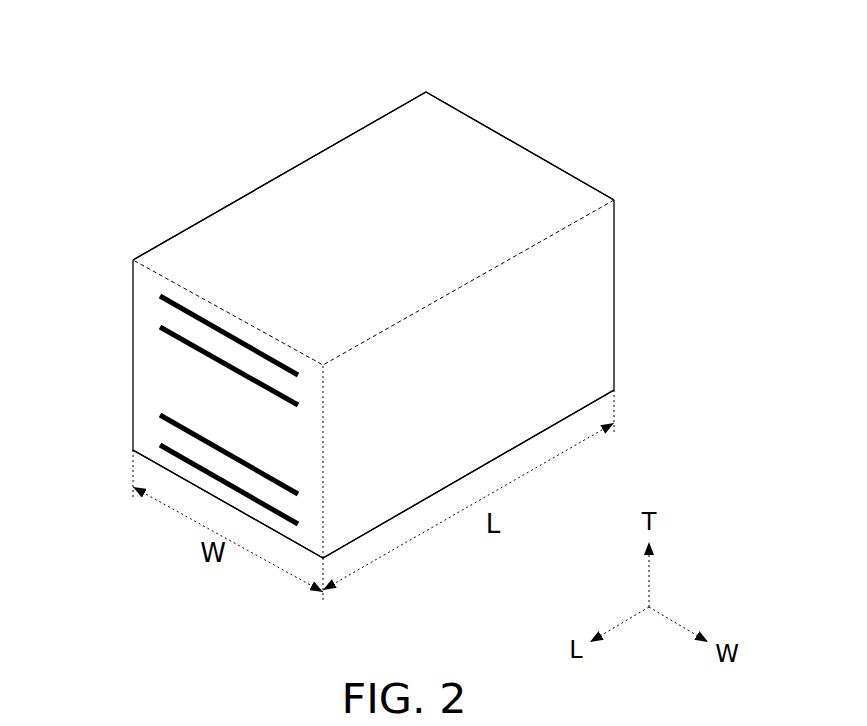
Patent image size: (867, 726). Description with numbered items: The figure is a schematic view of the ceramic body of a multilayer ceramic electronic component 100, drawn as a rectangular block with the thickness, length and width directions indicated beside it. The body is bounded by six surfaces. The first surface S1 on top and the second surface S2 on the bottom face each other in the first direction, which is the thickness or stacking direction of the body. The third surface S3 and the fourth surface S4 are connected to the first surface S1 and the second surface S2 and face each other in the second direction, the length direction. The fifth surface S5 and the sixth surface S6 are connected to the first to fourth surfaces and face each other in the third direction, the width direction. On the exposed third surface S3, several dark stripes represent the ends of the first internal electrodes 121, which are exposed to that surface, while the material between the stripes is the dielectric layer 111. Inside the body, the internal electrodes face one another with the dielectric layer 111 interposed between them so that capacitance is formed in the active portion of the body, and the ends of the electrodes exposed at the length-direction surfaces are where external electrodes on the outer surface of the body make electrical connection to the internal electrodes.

The multilayer ceramic electronic component 100 is at (395, 323).
The first surface S1 is at (377, 160).
The second surface S2 is at (383, 495).
The third surface S3 is at (247, 442).
The fourth surface S4 is at (517, 195).
The fifth surface S5 is at (585, 312).
The sixth surface S6 is at (213, 252).
The first internal electrode 121 is at (158, 298).
The dielectric layer 111 is at (160, 345).